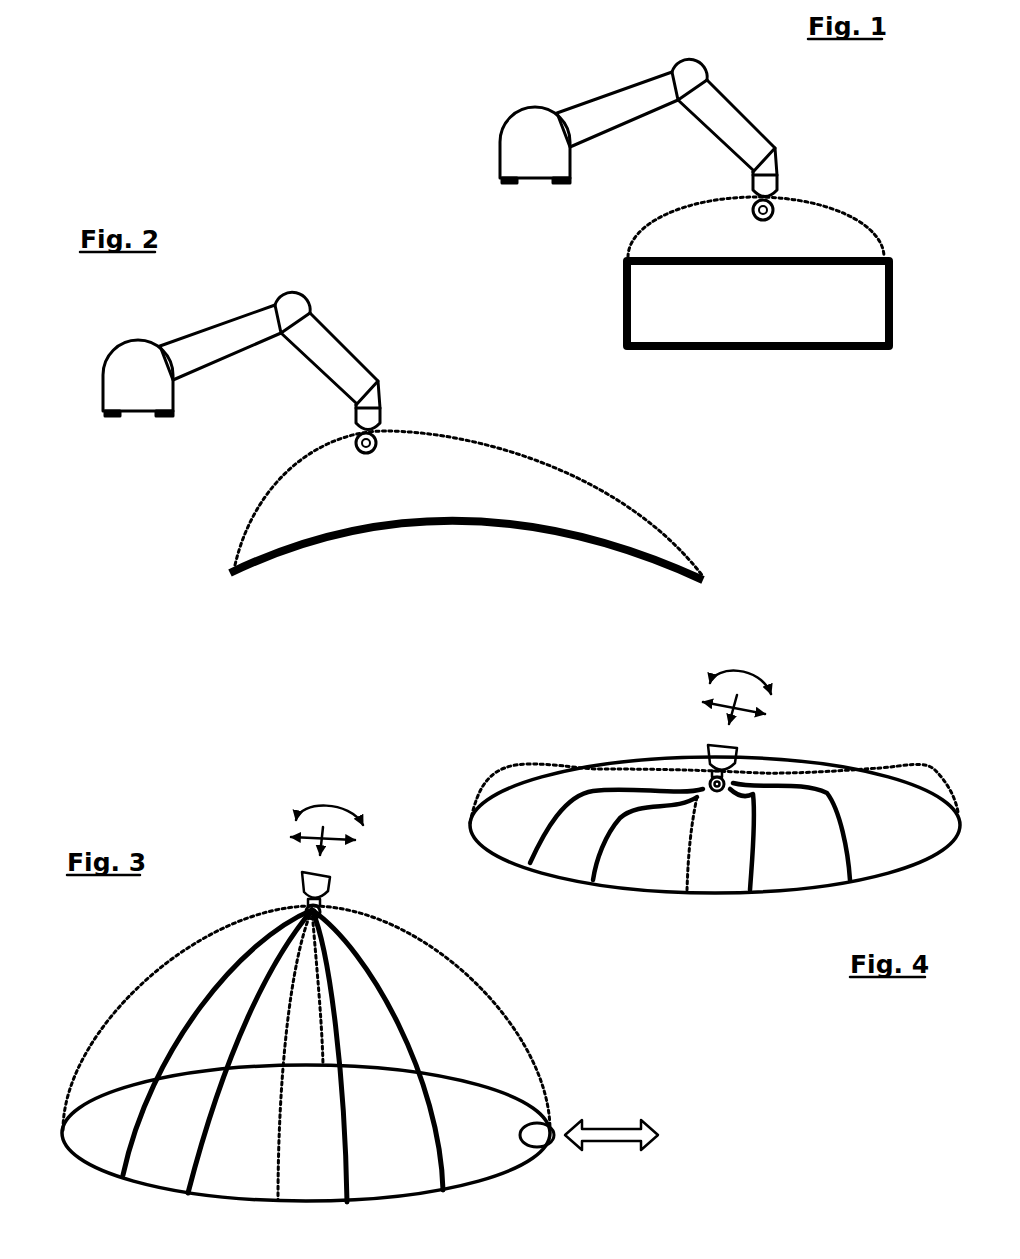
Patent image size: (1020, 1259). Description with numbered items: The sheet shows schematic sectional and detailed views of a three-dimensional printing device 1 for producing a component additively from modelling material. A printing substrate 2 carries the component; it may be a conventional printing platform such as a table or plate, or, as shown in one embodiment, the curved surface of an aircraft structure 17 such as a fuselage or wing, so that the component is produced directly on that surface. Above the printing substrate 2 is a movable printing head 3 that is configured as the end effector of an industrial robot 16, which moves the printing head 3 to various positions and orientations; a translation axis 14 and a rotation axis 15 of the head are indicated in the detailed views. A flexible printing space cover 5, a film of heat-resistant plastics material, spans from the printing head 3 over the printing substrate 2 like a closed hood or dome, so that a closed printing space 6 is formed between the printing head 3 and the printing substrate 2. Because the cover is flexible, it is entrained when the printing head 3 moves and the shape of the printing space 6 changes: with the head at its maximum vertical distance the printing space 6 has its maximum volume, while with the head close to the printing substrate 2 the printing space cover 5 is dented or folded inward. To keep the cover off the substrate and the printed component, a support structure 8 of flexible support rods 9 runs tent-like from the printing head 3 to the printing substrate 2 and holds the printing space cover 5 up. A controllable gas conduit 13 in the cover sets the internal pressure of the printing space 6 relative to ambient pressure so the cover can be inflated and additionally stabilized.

In FIG. 1, the 3D printing device 1 is at (852, 97).
In FIG. 2, the 3D printing device 1 is at (456, 327).
In FIG. 3, the 3D printing device 1 is at (86, 945).
In FIG. 4, the 3D printing device 1 is at (872, 692).
In FIG. 1, the printing substrate 2 is at (773, 255).
In FIG. 2, the printing substrate 2 is at (494, 521).
In FIG. 3, the printing substrate 2 is at (494, 1218).
In FIG. 4, the printing substrate 2 is at (905, 906).
In FIG. 1, the printing head 3 is at (747, 197).
In FIG. 2, the printing head 3 is at (352, 430).
In FIG. 3, the printing head 3 is at (300, 875).
In FIG. 4, the printing head 3 is at (708, 755).
In FIG. 1, the printing space cover 5 is at (870, 230).
In FIG. 2, the printing space cover 5 is at (648, 523).
In FIG. 3, the printing space cover 5 is at (445, 957).
In FIG. 4, the printing space cover 5 is at (927, 767).
In FIG. 1, the printing space 6 is at (826, 222).
In FIG. 2, the printing space 6 is at (472, 452).
In FIG. 3, the printing space 6 is at (495, 1047).
In FIG. 4, the printing space 6 is at (864, 803).
In FIG. 3, the support structure 8 is at (368, 944).
In FIG. 4, the support structure 8 is at (628, 783).
In FIG. 3, the support rods 9 is at (427, 1127).
In FIG. 4, the support rods 9 is at (837, 823).
In FIG. 3, the gas conduit 13 is at (550, 1128).
In FIG. 3, the translation axis 14 is at (328, 858).
In FIG. 4, the translation axis 14 is at (733, 723).
In FIG. 3, the rotation axis 15 is at (343, 806).
In FIG. 4, the rotation axis 15 is at (747, 672).
In FIG. 1, the industrial robot 16 is at (498, 150).
In FIG. 2, the industrial robot 16 is at (103, 383).
In FIG. 2, the aircraft structure 17 is at (586, 560).